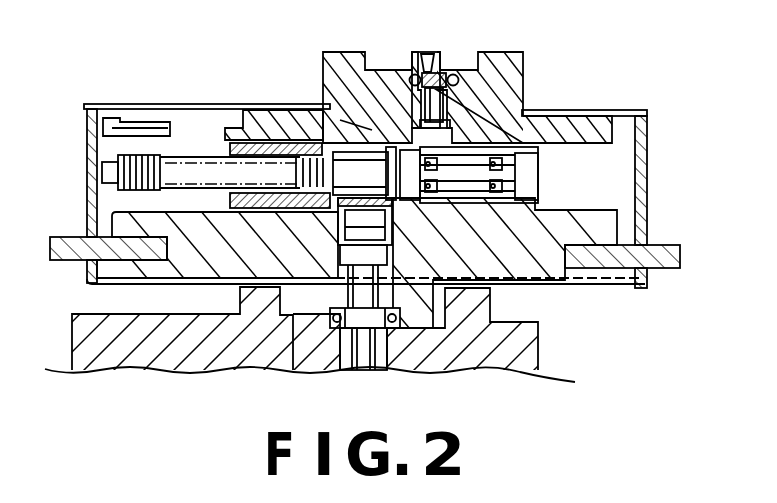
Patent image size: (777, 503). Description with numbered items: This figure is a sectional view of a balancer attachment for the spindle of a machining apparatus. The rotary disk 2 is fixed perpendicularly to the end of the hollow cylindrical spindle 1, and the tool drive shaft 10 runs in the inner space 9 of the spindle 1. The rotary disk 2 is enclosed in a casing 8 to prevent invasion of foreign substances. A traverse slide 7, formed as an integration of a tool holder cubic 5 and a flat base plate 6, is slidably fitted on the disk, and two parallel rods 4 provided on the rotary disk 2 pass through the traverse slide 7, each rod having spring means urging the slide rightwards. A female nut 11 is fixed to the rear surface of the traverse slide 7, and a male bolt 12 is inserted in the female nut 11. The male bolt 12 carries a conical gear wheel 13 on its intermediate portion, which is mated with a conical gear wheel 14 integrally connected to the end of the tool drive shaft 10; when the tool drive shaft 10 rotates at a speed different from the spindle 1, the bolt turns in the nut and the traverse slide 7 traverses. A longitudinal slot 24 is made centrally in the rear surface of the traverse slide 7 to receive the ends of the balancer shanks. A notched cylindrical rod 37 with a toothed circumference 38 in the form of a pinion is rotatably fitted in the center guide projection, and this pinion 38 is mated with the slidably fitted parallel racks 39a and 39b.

The hollow cylindrical spindle 1 is at (417, 333).
The rotary disk 2 is at (127, 228).
The parallel rod 4 is at (145, 128).
The tool holder cubic 5 is at (526, 72).
The flat base plate 6 is at (545, 125).
The traverse slide 7 is at (532, 51).
The casing 8 is at (648, 138).
The inner space 9 is at (417, 307).
The tool drive shaft 10 is at (367, 352).
The female nut 11 is at (262, 113).
The male bolt 12 is at (165, 148).
The conical gear wheel 13 is at (540, 177).
The conical gear wheel 14 is at (393, 214).
The longitudinal slot 24 is at (370, 127).
The notched cylindrical rod 37 is at (430, 62).
The toothed circumference 38 is at (434, 66).
The parallel rack 39a is at (458, 72).
The parallel rack 39b is at (411, 76).